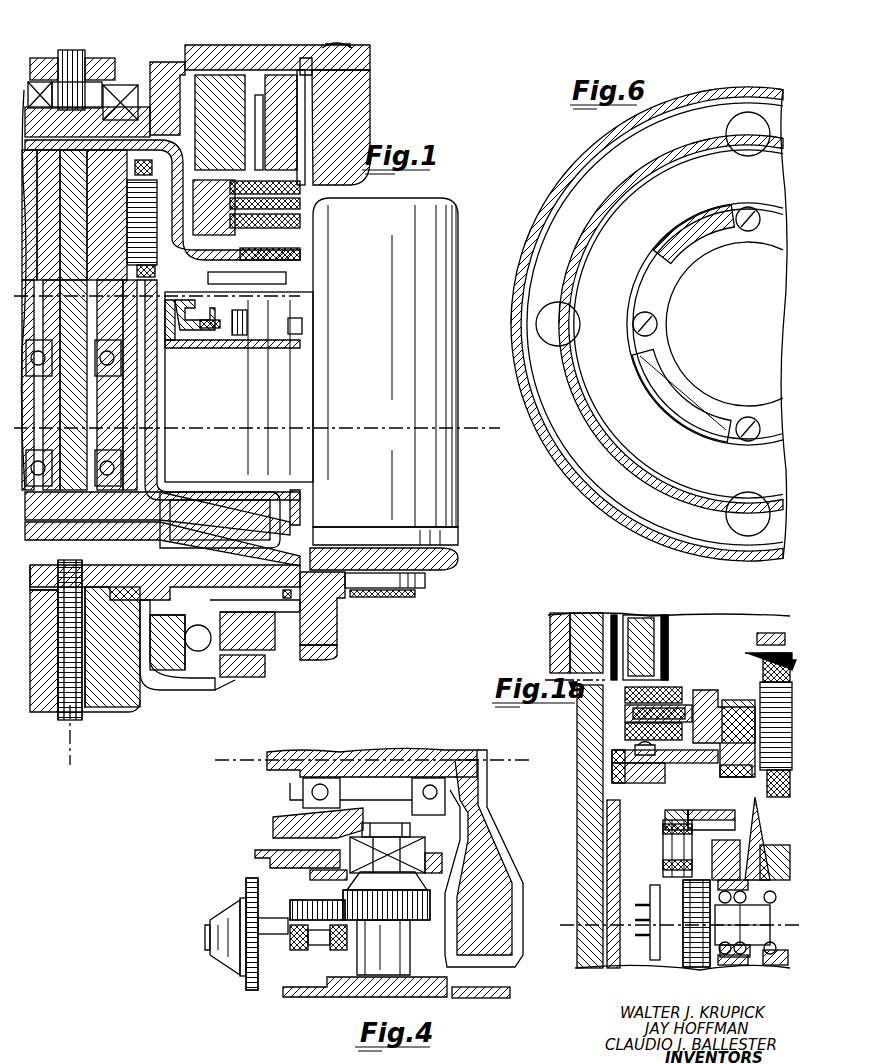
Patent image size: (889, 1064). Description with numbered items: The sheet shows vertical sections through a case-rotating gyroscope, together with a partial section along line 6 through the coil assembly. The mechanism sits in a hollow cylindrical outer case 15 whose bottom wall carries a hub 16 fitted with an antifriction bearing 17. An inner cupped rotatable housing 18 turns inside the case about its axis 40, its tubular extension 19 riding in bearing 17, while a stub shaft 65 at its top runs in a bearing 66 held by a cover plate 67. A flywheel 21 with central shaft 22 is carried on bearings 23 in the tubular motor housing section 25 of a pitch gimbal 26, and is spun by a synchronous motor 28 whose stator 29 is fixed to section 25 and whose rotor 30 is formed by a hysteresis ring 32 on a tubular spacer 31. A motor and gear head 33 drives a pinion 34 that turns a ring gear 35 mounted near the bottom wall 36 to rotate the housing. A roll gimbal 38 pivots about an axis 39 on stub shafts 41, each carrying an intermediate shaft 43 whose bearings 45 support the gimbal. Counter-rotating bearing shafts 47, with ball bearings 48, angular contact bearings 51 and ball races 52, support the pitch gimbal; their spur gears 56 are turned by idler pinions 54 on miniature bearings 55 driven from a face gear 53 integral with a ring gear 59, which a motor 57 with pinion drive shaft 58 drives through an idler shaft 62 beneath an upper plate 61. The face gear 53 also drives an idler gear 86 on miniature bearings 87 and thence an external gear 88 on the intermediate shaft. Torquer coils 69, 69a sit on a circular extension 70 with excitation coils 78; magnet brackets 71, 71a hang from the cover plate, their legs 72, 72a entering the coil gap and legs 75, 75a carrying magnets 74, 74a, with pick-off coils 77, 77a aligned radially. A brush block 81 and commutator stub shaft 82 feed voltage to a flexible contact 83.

In FIG. 1a, the section line 6- 6 is at (792, 653).
In FIG. 1, the outer case 15 is at (372, 58).
In FIG. 1a, the outer case 15 is at (578, 790).
In FIG. 1, the hub 16 is at (252, 645).
In FIG. 1, the antifriction bearing 17 is at (230, 678).
In FIG. 1, the inner cupped rotatable housing 18 is at (330, 500).
In FIG. 6, the inner cupped rotatable housing 18 is at (700, 222).
In FIG. 1a, the inner cupped rotatable housing 18 is at (630, 712).
In FIG. 4, the inner cupped rotatable housing 18 is at (315, 997).
In FIG. 1, the tubular extension 19 is at (168, 670).
In FIG. 1, the flywheel 21 is at (240, 523).
In FIG. 4, the flywheel 21 is at (496, 928).
In FIG. 1, the central shaft 22 is at (82, 395).
In FIG. 1, the anti-friction bearings 23 is at (95, 488).
In FIG. 4, the anti-friction bearings 23 is at (422, 775).
In FIG. 1, the tubular upper or motor housing section 25 is at (140, 340).
In FIG. 1, the pitch gimbal 26 is at (182, 483).
In FIG. 6, the pitch gimbal 26 is at (551, 391).
In FIG. 1a, the pitch gimbal 26 is at (745, 668).
In FIG. 4, the pitch gimbal 26 is at (345, 820).
In FIG. 1, the synchronous motor 28 is at (165, 178).
In FIG. 1, the stator 29 is at (158, 268).
In FIG. 1, the rotor 30 is at (122, 178).
In FIG. 1, the tubular spacer 31 is at (50, 255).
In FIG. 1, the tubular hysteresis ring 32 is at (60, 220).
In FIG. 1, the synchronous motor and gear head 33 is at (448, 345).
In FIG. 1, the pinion 34 is at (410, 597).
In FIG. 1, the driven ring gear 35 is at (305, 625).
In FIG. 1, the bottom wall 36 is at (305, 595).
In FIG. 1, the roll gimbal 38 is at (183, 340).
In FIG. 1a, the roll gimbal 38 is at (715, 810).
In FIG. 4, the roll gimbal 38 is at (300, 848).
In FIG. 1a, the axis 39 is at (655, 940).
In FIG. 1, the axis of rotation 40 is at (72, 748).
In FIG. 4, the stub shaft 41 is at (378, 955).
In FIG. 4, the intermediate shaft 43 is at (388, 830).
In FIG. 4, the anti-friction bearings 45 is at (425, 848).
In FIG. 1a, the counter-rotating bearing shaft 47 is at (780, 920).
In FIG. 1a, the ball bearing 48 is at (730, 962).
In FIG. 1a, the angular contact bearings 51 is at (752, 870).
In FIG. 1a, the angular contact ball race 52 is at (742, 925).
In FIG. 1, the annular face gear 53 is at (208, 328).
In FIG. 1a, the annular face gear 53 is at (690, 810).
In FIG. 4, the annular face gear 53 is at (275, 905).
In FIG. 1a, the idler pinion 54 is at (686, 923).
In FIG. 1a, the miniature ball bearings 55 is at (668, 830).
In FIG. 1a, the small spur gear 56 is at (690, 955).
In FIG. 1, the motor 57 is at (228, 381).
In FIG. 1, the pinion drive shaft 58 is at (250, 326).
In FIG. 1, the ring gear 59 is at (220, 302).
In FIG. 1a, the ring gear 59 is at (655, 785).
In FIG. 4, the ring gear 59 is at (273, 925).
In FIG. 1, the upper plate 61 is at (220, 280).
In FIG. 4, the upper plate 61 is at (238, 895).
In FIG. 4, the idler shaft 62 is at (207, 937).
In FIG. 1, the stub shaft 65 is at (72, 90).
In FIG. 1, the anti-friction bearing 66 is at (124, 85).
In FIG. 1, the cover plate 67 is at (310, 62).
In FIG. 1, the torquer coil 69 is at (345, 45).
In FIG. 6, the torquer coil 69 is at (585, 232).
In FIG. 1a, the torquer coil 69 is at (668, 618).
In FIG. 1, the torquer coil 69a is at (305, 105).
In FIG. 6, the torquer coil 69a is at (566, 188).
In FIG. 1a, the torquer coil 69a is at (614, 616).
In FIG. 1, the flat circular extension 70 is at (302, 222).
In FIG. 1a, the flat circular extension 70 is at (640, 732).
In FIG. 1a, the magnet support bracket 71 is at (640, 618).
In FIG. 1, the magnet support bracket 71a is at (215, 60).
In FIG. 1a, the right-hand leg 72 is at (645, 648).
In FIG. 1, the right-hand leg 72a is at (290, 125).
In FIG. 1a, the permanent magnet 74 is at (596, 651).
In FIG. 1, the permanent magnet 74a is at (240, 98).
In FIG. 1a, the leg 75 is at (555, 636).
In FIG. 1, the leg 75a is at (180, 75).
In FIG. 1a, the sensing pick-off coil 77 is at (665, 705).
In FIG. 1, the sensing pick-off coil 77a is at (300, 205).
In FIG. 1, the pick-off excitation coils 78 is at (300, 190).
In FIG. 6, the pick-off excitation coils 78 is at (580, 310).
In FIG. 1a, the pick-off excitation coils 78 is at (700, 705).
In FIG. 1, the brush block 81 is at (120, 700).
In FIG. 1, the stub shaft 82 is at (90, 660).
In FIG. 1, the flexible contact 83 is at (165, 530).
In FIG. 4, the idler gear 86 is at (305, 898).
In FIG. 4, the miniature bearings 87 is at (305, 950).
In FIG. 4, the external gear 88 is at (430, 910).